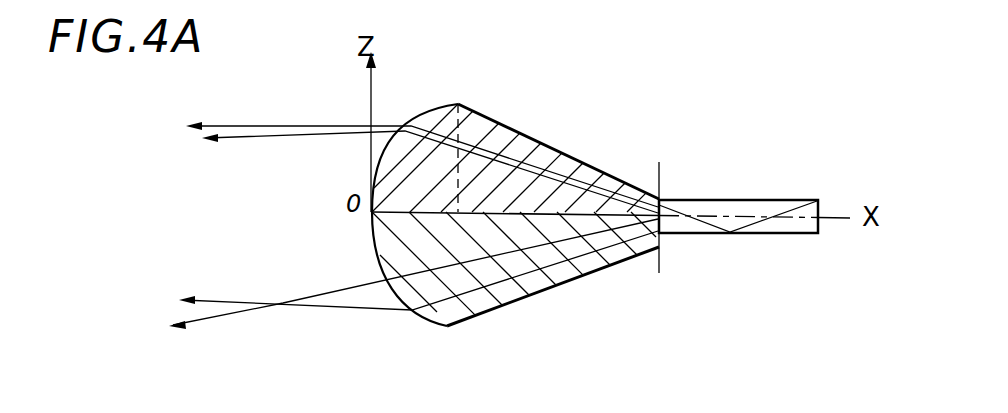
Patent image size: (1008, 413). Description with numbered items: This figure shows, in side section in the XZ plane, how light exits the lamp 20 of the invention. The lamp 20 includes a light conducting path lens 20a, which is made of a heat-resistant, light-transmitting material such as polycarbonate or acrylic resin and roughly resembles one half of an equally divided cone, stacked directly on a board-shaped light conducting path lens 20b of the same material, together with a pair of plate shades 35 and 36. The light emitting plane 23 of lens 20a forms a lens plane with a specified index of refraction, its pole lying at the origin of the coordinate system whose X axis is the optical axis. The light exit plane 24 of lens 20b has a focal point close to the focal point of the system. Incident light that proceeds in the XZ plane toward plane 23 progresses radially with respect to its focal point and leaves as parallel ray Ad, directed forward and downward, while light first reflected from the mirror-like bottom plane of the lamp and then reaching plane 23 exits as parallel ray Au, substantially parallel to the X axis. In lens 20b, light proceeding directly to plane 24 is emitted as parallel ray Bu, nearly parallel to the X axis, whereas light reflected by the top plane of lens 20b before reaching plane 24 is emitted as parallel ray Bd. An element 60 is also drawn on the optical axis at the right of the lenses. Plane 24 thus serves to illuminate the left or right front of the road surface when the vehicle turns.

The lamp 20 is at (484, 230).
The light conducting path lens 20a is at (503, 130).
The light conducting path lens 20b is at (535, 285).
The light emitting plane 23 is at (428, 114).
The light exit plane 24 is at (377, 257).
The plate shade 35 is at (661, 170).
The plate shade 36 is at (661, 264).
The optical fiber 60 is at (767, 199).
The parallel ray AU Au is at (213, 123).
The parallel ray AD Ad is at (241, 137).
The parallel ray BU Bu is at (238, 300).
The parallel ray BD Bd is at (193, 323).